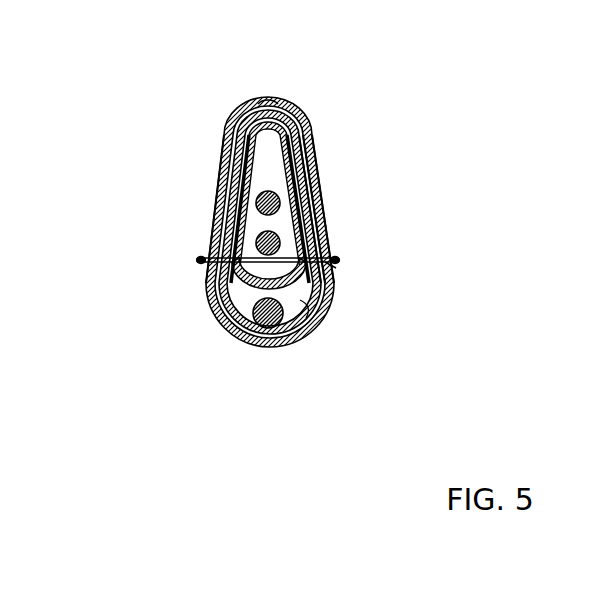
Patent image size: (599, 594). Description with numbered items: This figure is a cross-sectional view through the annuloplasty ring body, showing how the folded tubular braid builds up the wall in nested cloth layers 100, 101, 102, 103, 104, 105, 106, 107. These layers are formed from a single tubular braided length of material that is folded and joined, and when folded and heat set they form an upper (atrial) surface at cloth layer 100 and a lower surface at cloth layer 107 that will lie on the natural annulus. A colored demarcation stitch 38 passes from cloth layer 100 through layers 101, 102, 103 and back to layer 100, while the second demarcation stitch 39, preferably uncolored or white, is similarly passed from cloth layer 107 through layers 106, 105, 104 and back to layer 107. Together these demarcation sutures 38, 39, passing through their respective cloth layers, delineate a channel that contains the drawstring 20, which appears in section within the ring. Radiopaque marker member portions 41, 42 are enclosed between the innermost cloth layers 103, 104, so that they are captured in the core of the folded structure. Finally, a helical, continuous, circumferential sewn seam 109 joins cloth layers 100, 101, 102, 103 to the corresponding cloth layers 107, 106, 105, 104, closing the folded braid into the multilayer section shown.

The drawstring 20 is at (238, 342).
The colored demarcation stitch 38 is at (199, 262).
The second demarcation stitch 39 is at (337, 260).
The radiopaque marker member portion 41 is at (217, 223).
The radiopaque marker member portion 42 is at (338, 265).
The cloth layer 100 is at (241, 107).
The cloth layer 101 is at (218, 173).
The cloth layer 102 is at (227, 167).
The cloth layer 103 is at (217, 207).
The cloth layer 104 is at (313, 135).
The cloth layer 105 is at (320, 163).
The cloth layer 106 is at (326, 196).
The cloth layer 107 is at (333, 227).
The helical sewn seam 109 is at (271, 96).